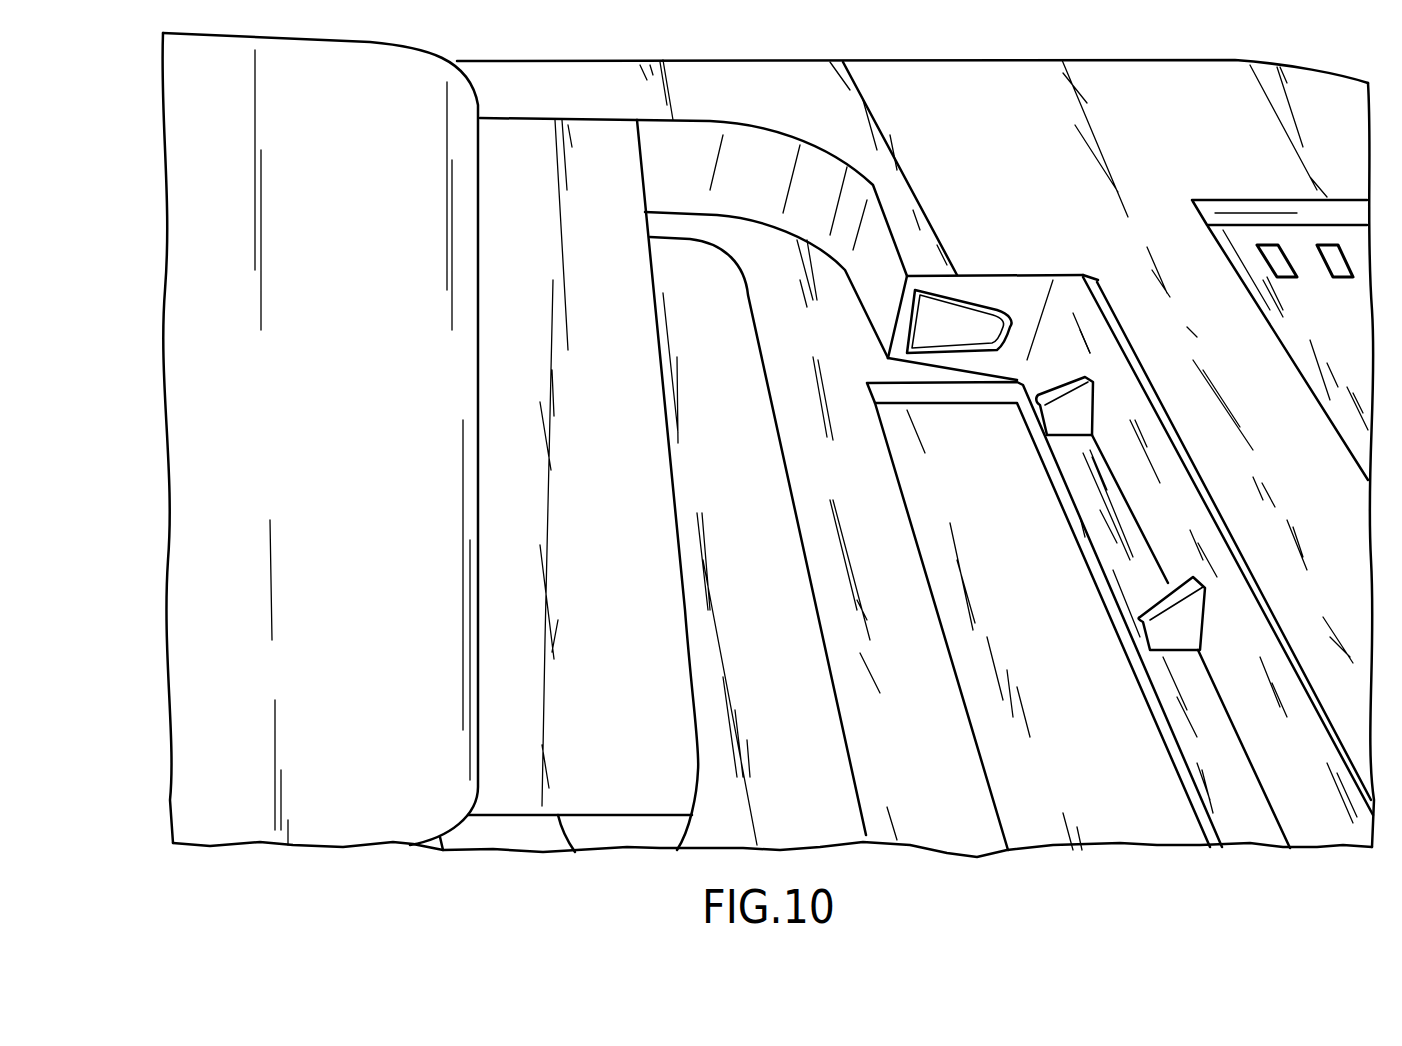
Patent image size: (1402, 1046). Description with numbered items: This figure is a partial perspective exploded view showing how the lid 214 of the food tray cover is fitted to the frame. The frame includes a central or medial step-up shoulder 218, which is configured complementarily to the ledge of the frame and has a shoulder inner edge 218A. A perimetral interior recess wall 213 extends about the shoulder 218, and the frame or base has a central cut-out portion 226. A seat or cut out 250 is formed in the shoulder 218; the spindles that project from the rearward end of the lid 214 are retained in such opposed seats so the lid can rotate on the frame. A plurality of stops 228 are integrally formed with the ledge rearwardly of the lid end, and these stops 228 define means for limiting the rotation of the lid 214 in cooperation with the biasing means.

The perimetral interior recess wall 213 is at (838, 350).
The lid 214 is at (380, 55).
The step-up shoulder 218 is at (1008, 72).
The shoulder inner edge 218A is at (1097, 280).
The central cut-out portion 226 is at (752, 492).
The stops 228 is at (1083, 377).
The seat or cut out 250 is at (1010, 300).